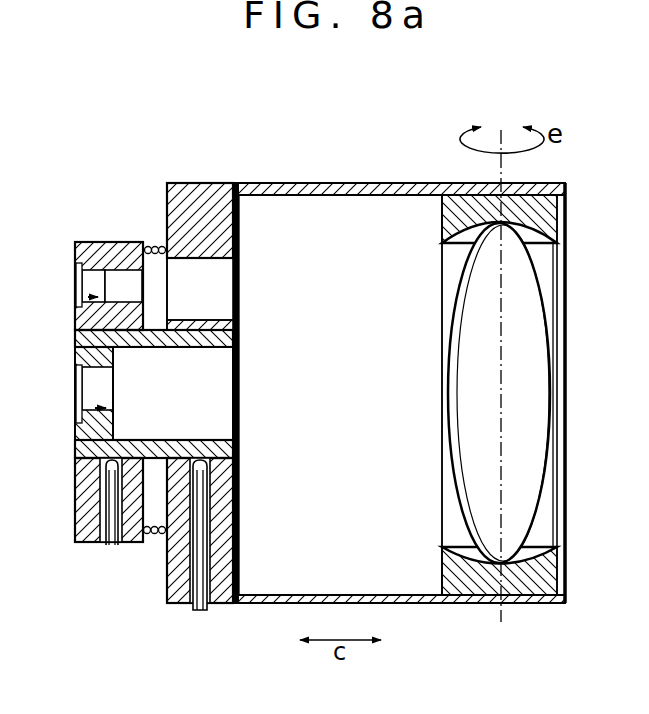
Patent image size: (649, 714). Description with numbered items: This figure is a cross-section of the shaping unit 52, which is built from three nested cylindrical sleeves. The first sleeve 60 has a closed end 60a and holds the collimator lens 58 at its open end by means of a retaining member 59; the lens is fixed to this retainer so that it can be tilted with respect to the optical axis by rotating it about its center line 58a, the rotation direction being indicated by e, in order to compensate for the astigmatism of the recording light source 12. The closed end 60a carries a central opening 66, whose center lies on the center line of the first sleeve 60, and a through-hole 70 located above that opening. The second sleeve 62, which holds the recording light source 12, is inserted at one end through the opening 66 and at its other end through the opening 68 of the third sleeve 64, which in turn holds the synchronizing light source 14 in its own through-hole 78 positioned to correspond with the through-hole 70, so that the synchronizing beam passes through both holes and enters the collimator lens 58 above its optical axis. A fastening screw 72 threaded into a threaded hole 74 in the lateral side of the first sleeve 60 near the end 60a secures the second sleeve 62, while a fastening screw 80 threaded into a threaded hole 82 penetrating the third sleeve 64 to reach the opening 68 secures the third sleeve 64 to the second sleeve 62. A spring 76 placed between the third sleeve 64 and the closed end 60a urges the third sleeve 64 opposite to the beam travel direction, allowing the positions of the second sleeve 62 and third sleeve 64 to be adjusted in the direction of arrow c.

The shaping unit 52 is at (378, 157).
The first sleeve 60 is at (273, 185).
The through-hole 70 is at (198, 277).
The third sleeve 64 is at (93, 242).
The through-hole 78 is at (123, 285).
The synchronizing light source 14 is at (75, 283).
The second sleeve 62 is at (75, 345).
The recording light source 12 is at (58, 386).
The opening 66 is at (240, 352).
The opening 68 is at (72, 458).
The threaded hole 82 is at (100, 547).
The fastening screw 80 is at (110, 547).
The closed end 60a is at (160, 505).
The spring 76 is at (150, 545).
The threaded hole 74 is at (215, 547).
The fastening screw 72 is at (197, 612).
The retaining member 59 is at (453, 207).
The collimator lens 58 is at (535, 438).
The center line 58a is at (503, 172).